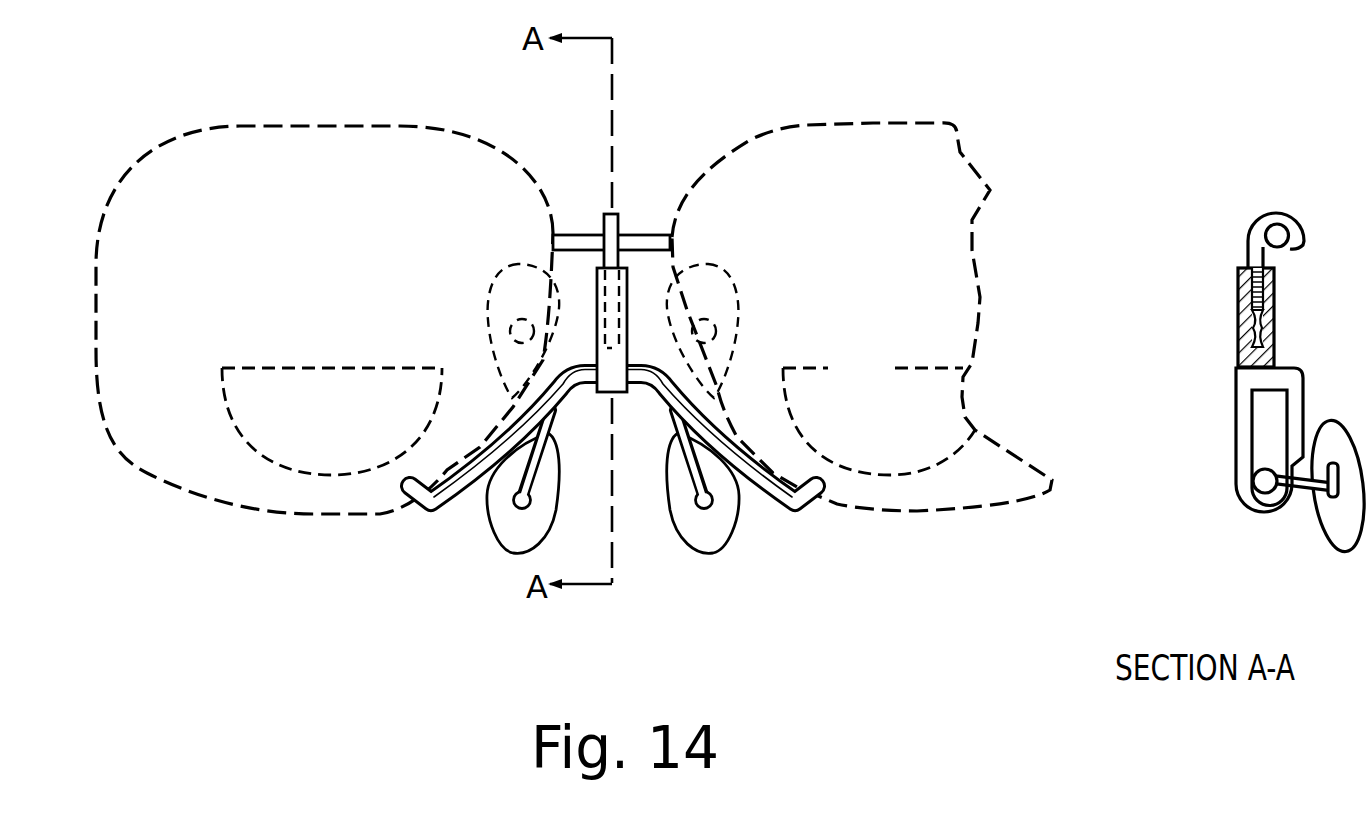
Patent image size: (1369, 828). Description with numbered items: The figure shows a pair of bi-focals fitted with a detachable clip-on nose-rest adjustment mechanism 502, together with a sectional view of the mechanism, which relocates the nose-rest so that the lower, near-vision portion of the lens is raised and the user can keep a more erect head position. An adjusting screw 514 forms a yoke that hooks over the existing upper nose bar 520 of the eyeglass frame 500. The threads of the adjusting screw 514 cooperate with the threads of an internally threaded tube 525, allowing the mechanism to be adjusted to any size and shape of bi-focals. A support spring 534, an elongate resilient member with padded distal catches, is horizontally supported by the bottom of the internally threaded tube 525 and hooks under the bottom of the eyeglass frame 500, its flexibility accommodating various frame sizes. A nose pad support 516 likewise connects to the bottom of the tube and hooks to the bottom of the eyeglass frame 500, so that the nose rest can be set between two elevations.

The eyeglass frame 500 is at (337, 515).
The detachable clip-on nose-rest adjustment mechanism 502 is at (543, 157).
The adjusting screw 514 is at (627, 218).
The nose pad support 516 is at (720, 492).
The upper nose bar 520 is at (568, 234).
The internally threaded tube 525 is at (640, 291).
The support spring 534 is at (705, 417).